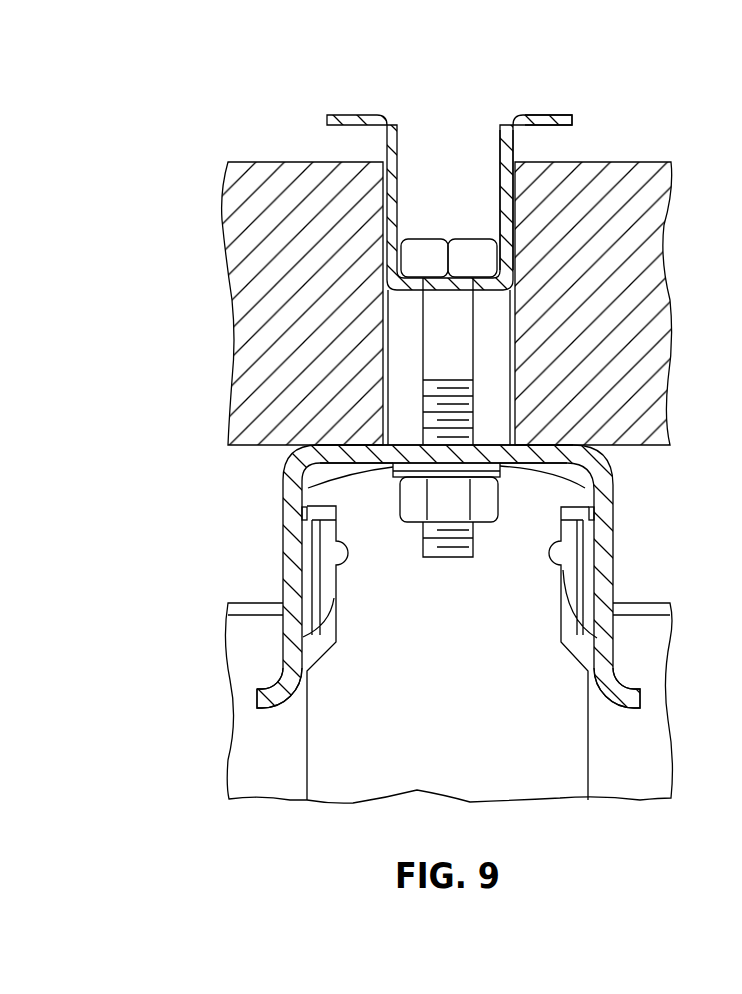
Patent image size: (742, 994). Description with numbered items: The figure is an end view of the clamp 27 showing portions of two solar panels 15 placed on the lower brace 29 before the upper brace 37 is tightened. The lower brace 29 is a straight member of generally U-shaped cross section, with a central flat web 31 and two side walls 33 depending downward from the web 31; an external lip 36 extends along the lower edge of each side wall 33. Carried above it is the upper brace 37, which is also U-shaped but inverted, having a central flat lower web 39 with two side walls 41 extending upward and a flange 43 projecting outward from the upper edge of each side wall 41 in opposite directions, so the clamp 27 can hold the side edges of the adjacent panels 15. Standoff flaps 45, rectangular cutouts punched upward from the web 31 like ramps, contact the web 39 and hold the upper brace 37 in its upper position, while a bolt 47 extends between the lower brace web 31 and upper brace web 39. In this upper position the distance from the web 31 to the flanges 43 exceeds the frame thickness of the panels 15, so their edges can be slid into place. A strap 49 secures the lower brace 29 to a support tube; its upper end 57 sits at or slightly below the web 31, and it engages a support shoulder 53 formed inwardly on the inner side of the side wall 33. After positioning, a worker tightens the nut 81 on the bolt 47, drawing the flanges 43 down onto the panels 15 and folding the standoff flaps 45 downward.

The clamp 27 is at (236, 74).
The upper brace 37 is at (494, 106).
The flange 43 is at (548, 113).
The solar panel 15 is at (620, 162).
The side wall 41 is at (500, 163).
The web 39 is at (437, 290).
The standoff flap 45 is at (402, 351).
The web 31 is at (372, 443).
The upper end 57 is at (537, 473).
The lower brace 29 is at (272, 491).
The support shoulder 53 is at (585, 518).
The side wall 33 is at (283, 522).
The nut 81 is at (485, 500).
The bolt 47 is at (423, 543).
The external lip 36 is at (256, 696).
The strap 49 is at (523, 780).